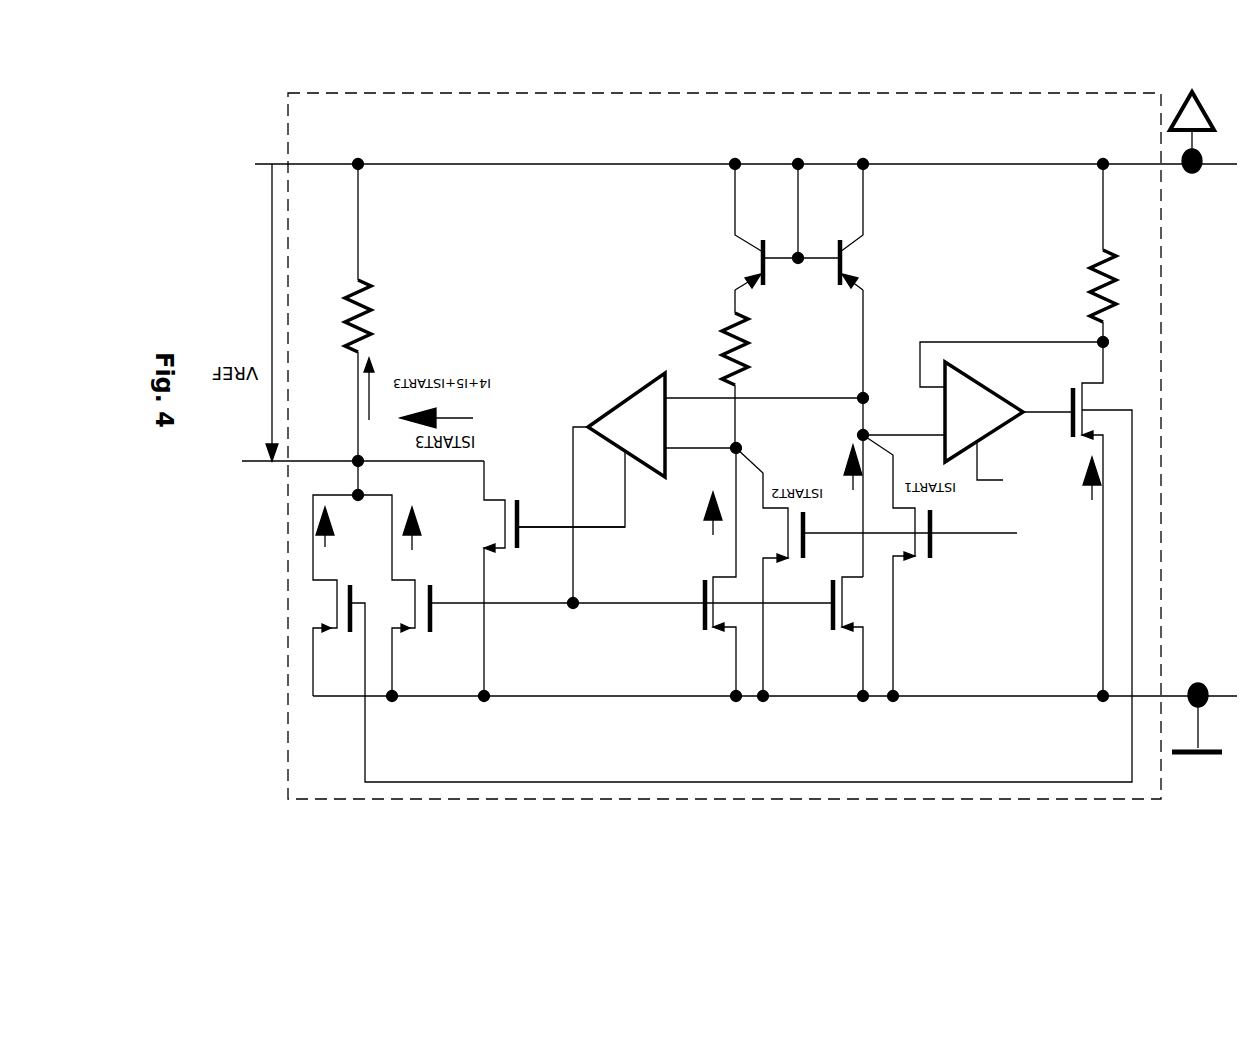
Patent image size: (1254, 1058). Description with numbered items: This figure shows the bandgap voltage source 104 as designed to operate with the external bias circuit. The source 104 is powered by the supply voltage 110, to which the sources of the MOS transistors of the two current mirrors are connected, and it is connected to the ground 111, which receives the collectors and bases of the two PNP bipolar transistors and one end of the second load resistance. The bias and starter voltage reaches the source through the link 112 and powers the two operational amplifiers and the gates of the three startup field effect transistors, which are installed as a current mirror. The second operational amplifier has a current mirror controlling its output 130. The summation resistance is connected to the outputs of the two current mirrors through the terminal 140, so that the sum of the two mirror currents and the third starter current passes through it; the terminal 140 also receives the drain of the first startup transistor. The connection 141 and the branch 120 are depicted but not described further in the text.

The bandgap voltage source 104 is at (1161, 225).
The voltage VCC 110 is at (1225, 690).
The ground 111 is at (1203, 166).
The link 112 is at (627, 495).
The current source I4 120 is at (393, 505).
The output 130 is at (325, 560).
The terminal 140 is at (356, 458).
The connection to resistor R3 141 is at (360, 166).